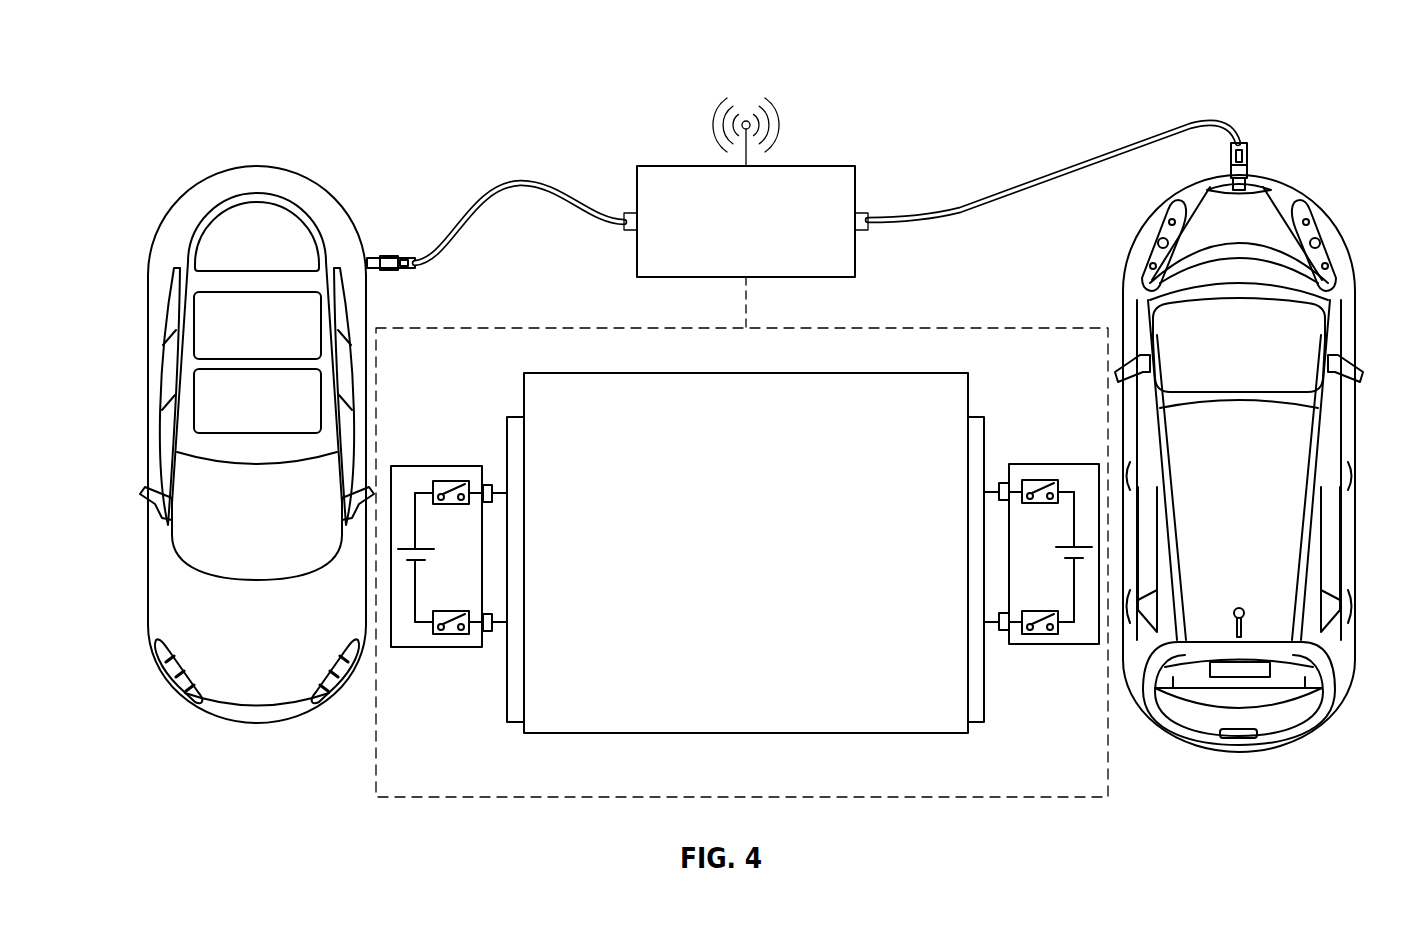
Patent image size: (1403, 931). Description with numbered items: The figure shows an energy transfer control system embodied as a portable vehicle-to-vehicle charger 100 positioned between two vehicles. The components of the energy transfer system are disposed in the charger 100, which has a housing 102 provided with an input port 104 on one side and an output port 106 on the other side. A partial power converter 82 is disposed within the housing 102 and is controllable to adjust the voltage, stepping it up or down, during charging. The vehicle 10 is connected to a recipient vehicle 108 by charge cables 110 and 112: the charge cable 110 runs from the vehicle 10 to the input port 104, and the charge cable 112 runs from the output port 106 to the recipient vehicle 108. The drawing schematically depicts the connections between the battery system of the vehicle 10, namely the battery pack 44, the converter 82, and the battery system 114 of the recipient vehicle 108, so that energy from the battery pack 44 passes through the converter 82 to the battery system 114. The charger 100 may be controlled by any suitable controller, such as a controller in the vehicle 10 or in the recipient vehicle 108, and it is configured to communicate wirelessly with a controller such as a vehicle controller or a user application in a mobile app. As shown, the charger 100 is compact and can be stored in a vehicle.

The vehicle 10 is at (213, 190).
The battery pack 44 is at (403, 630).
The partial power converter 82 is at (913, 373).
The portable V2V charger 100 is at (710, 165).
The housing 102 is at (680, 195).
The input port 104 is at (630, 232).
The output port 106 is at (862, 232).
The recipient vehicle 108 is at (1285, 202).
The charge cable 110 is at (500, 185).
The charge cable 112 is at (1138, 136).
The battery system 114 is at (1014, 634).